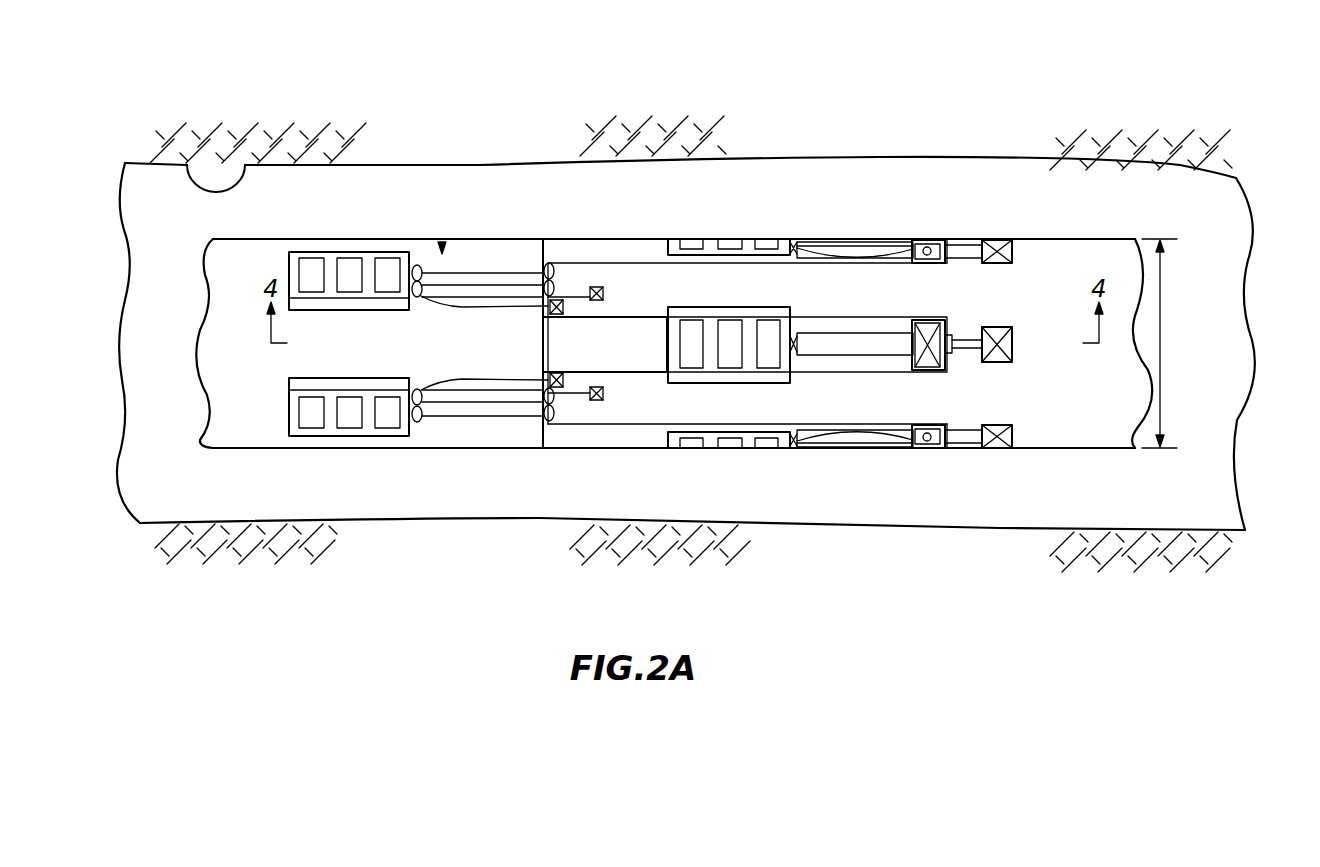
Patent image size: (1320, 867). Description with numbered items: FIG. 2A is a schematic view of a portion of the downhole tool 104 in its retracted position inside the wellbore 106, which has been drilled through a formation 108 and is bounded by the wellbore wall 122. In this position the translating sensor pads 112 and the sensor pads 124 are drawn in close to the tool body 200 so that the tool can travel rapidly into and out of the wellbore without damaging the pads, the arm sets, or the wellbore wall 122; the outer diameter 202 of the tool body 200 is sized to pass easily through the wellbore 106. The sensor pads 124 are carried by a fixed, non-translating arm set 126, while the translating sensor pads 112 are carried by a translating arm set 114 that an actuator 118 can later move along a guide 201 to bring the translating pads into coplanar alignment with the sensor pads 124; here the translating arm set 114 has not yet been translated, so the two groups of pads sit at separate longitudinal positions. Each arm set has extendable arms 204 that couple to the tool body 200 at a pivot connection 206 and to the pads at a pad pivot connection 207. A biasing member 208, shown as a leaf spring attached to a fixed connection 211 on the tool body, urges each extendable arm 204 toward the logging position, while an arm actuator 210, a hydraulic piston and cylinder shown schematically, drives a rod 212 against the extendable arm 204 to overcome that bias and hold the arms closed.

The downhole tool 104 is at (1001, 207).
The wellbore 106 is at (180, 254).
The formation 108 is at (746, 106).
The translating sensor pad 112 is at (713, 239).
The translating arm set 114 is at (825, 216).
The actuator 118 is at (1013, 256).
The wellbore wall 122 is at (188, 170).
The sensor pad 124 is at (357, 252).
The arm set 126 is at (442, 243).
The tool body 200 is at (218, 432).
The guide 201 is at (598, 358).
The outer diameter 202 is at (1162, 345).
The extendable arm 204 is at (478, 272).
The pivot connection 206 is at (548, 262).
The pad pivot connection 207 is at (417, 264).
The biasing member 208 is at (453, 380).
The arm actuator 210 is at (604, 293).
The fixed connection 211 is at (548, 378).
The rod 212 is at (557, 300).